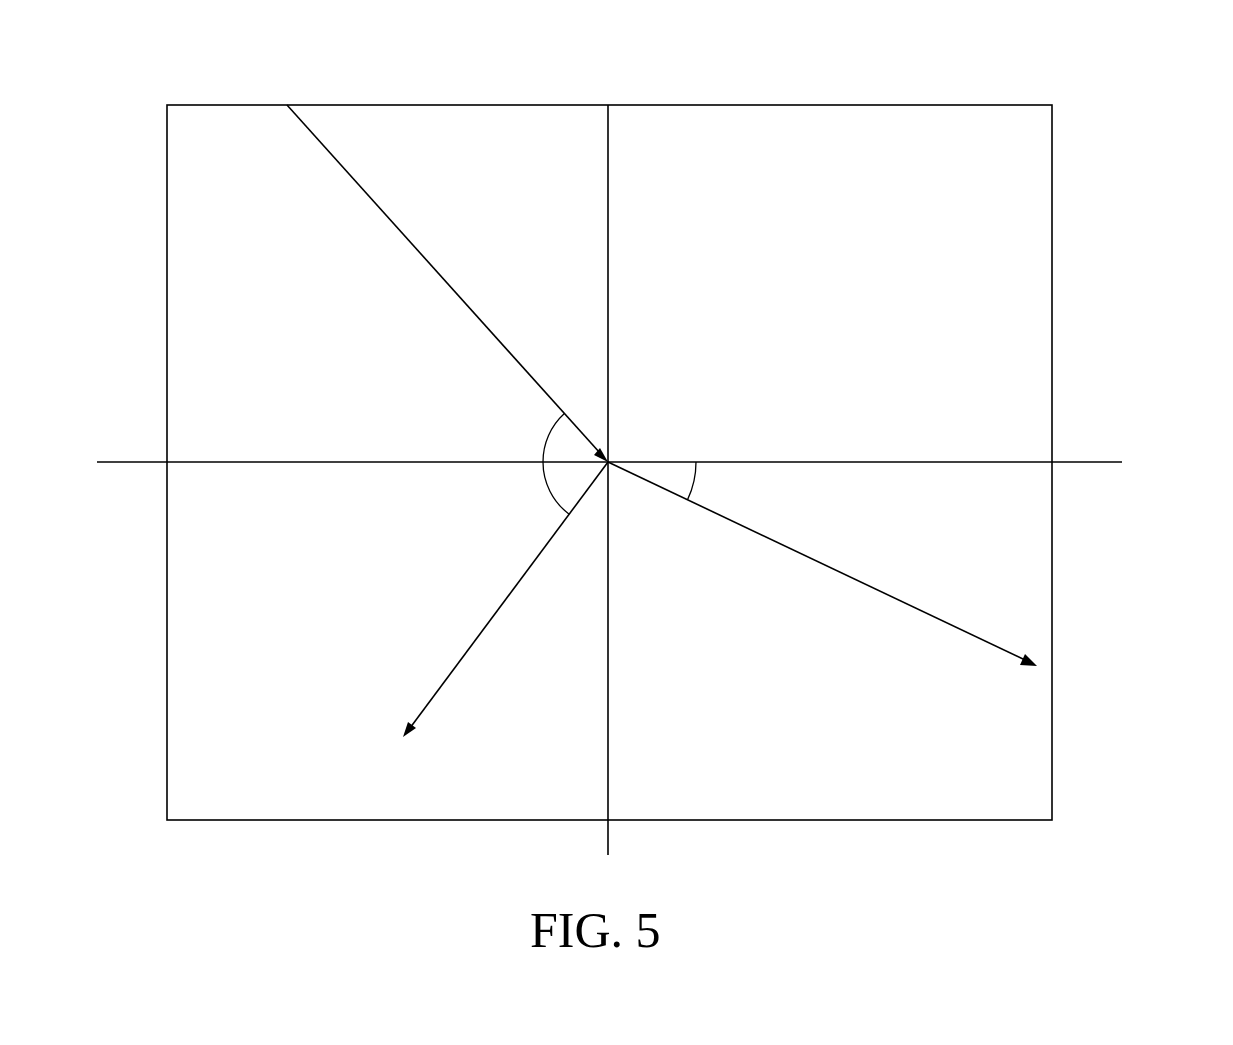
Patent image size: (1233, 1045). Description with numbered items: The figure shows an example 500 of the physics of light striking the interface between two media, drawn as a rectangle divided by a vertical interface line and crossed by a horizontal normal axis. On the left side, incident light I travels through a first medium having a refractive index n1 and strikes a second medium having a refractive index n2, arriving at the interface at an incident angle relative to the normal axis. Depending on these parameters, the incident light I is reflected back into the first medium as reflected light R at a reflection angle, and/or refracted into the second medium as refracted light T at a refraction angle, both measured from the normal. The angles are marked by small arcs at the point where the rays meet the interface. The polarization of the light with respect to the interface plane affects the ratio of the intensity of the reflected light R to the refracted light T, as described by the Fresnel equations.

The example of the physics of light striking an interface 500 is at (660, 441).
The incident light I is at (447, 283).
The reflected light R is at (505, 599).
The refracted light T is at (822, 564).
The refractive index of the first medium n1 is at (387, 462).
The refractive index of the second medium n2 is at (830, 462).